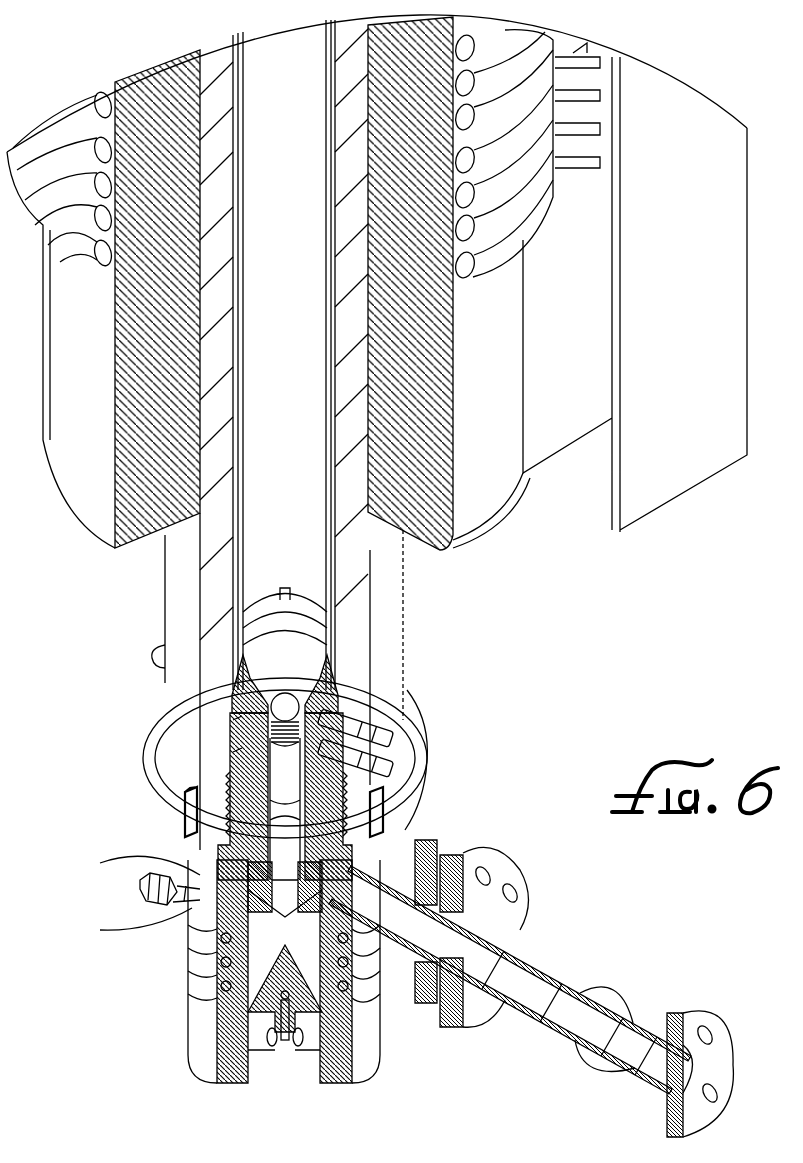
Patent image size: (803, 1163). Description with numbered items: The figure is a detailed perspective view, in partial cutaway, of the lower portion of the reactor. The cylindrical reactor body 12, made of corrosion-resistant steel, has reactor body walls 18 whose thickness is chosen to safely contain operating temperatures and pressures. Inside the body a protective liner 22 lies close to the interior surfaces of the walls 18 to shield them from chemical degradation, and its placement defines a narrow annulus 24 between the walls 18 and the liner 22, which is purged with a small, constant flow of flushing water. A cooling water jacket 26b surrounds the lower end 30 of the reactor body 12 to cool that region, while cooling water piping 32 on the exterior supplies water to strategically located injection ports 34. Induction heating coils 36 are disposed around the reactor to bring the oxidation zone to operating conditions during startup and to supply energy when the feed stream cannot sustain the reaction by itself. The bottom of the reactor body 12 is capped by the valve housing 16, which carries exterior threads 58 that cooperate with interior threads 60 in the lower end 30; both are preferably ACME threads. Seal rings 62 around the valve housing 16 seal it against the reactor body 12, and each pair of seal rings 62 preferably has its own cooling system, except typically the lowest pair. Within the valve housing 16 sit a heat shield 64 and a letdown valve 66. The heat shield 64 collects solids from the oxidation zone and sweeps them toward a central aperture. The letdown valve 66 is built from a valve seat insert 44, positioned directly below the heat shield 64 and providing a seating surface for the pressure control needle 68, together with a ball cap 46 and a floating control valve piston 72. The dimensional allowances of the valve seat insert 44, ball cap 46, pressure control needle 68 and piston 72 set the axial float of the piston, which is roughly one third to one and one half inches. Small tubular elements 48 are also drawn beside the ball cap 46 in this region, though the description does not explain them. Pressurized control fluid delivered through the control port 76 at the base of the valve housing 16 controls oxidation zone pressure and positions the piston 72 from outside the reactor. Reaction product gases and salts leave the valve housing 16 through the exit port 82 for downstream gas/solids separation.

The reactor body 12 is at (402, 621).
The valve housing 16 is at (195, 887).
The reactor body walls 18 is at (240, 368).
The protective liner 22 is at (400, 573).
The annulus 24 is at (238, 288).
The cooling water jacket 26b is at (420, 772).
The lower end 30 is at (185, 830).
The cooling water piping 32 is at (156, 652).
The injection ports 34 is at (180, 905).
The induction heating coils 36 is at (83, 240).
The valve seat insert 44 is at (235, 690).
The ball cap 46 is at (233, 733).
The nozzle tubes 48 is at (400, 768).
The exterior threads 58 is at (228, 815).
The interior threads 60 is at (350, 795).
The seal rings 62 is at (238, 720).
The heat shield 64 is at (300, 690).
The letdown valve 66 is at (300, 668).
The pressure control needle 68 is at (284, 698).
The floating control valve piston 72 is at (226, 966).
The control port 76 is at (285, 1065).
The exit port 82 is at (470, 848).